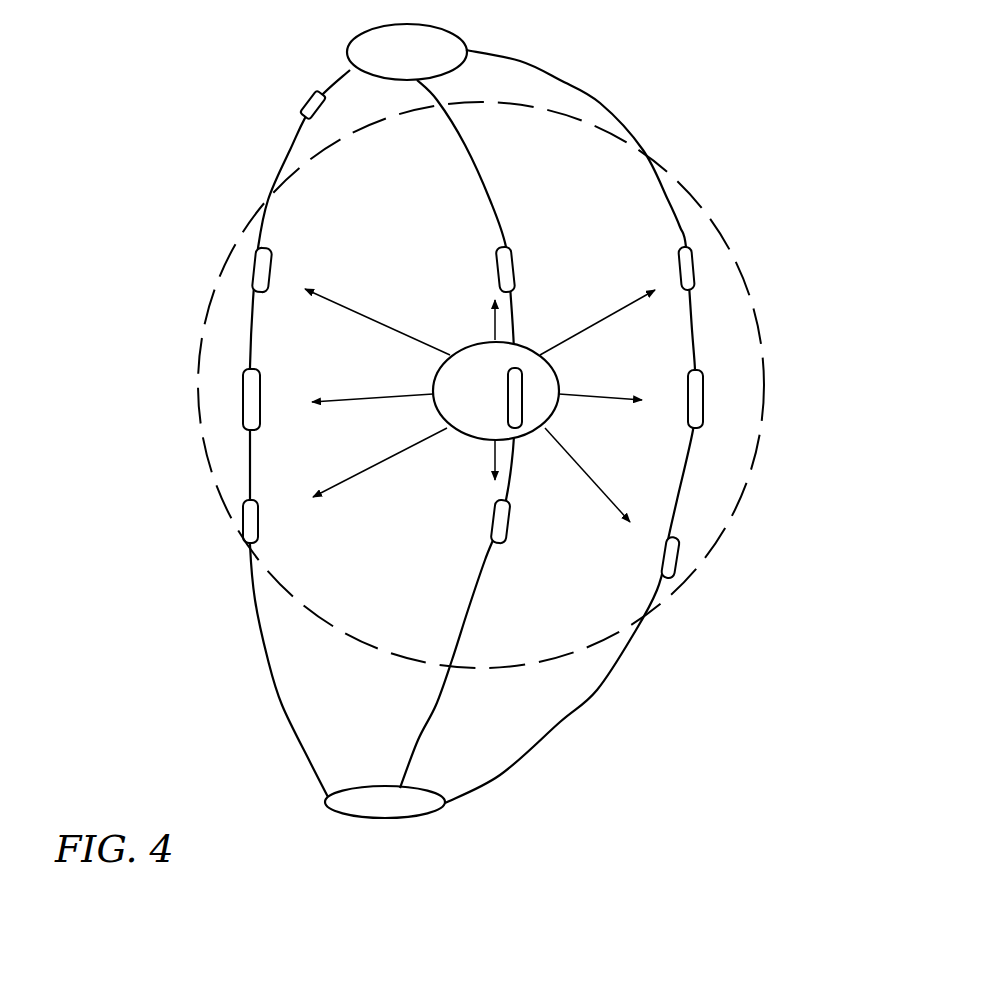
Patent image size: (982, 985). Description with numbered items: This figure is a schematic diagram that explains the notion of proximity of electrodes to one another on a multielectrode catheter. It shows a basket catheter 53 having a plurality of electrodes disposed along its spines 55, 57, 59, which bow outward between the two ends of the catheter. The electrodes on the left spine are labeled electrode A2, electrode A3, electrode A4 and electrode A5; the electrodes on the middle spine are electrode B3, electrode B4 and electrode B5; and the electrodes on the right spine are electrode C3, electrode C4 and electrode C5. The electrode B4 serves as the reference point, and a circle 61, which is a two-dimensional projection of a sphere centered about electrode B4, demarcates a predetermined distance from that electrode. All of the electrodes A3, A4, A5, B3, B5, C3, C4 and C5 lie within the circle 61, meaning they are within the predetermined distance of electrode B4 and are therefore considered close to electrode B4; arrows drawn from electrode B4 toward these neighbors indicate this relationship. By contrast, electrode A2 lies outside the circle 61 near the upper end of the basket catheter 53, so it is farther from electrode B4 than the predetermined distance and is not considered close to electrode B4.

The basket catheter 53 is at (775, 153).
The spine 55 is at (512, 760).
The spine 57 is at (418, 734).
The spine 59 is at (280, 704).
The circle 61 is at (205, 468).
The electrode A2 is at (293, 105).
The electrode A3 is at (277, 269).
The electrode A4 is at (270, 399).
The electrode A5 is at (268, 521).
The electrode B3 is at (486, 269).
The electrode B4 is at (496, 391).
The electrode B5 is at (483, 521).
The electrode C3 is at (669, 267).
The electrode C4 is at (676, 395).
The electrode C5 is at (652, 557).